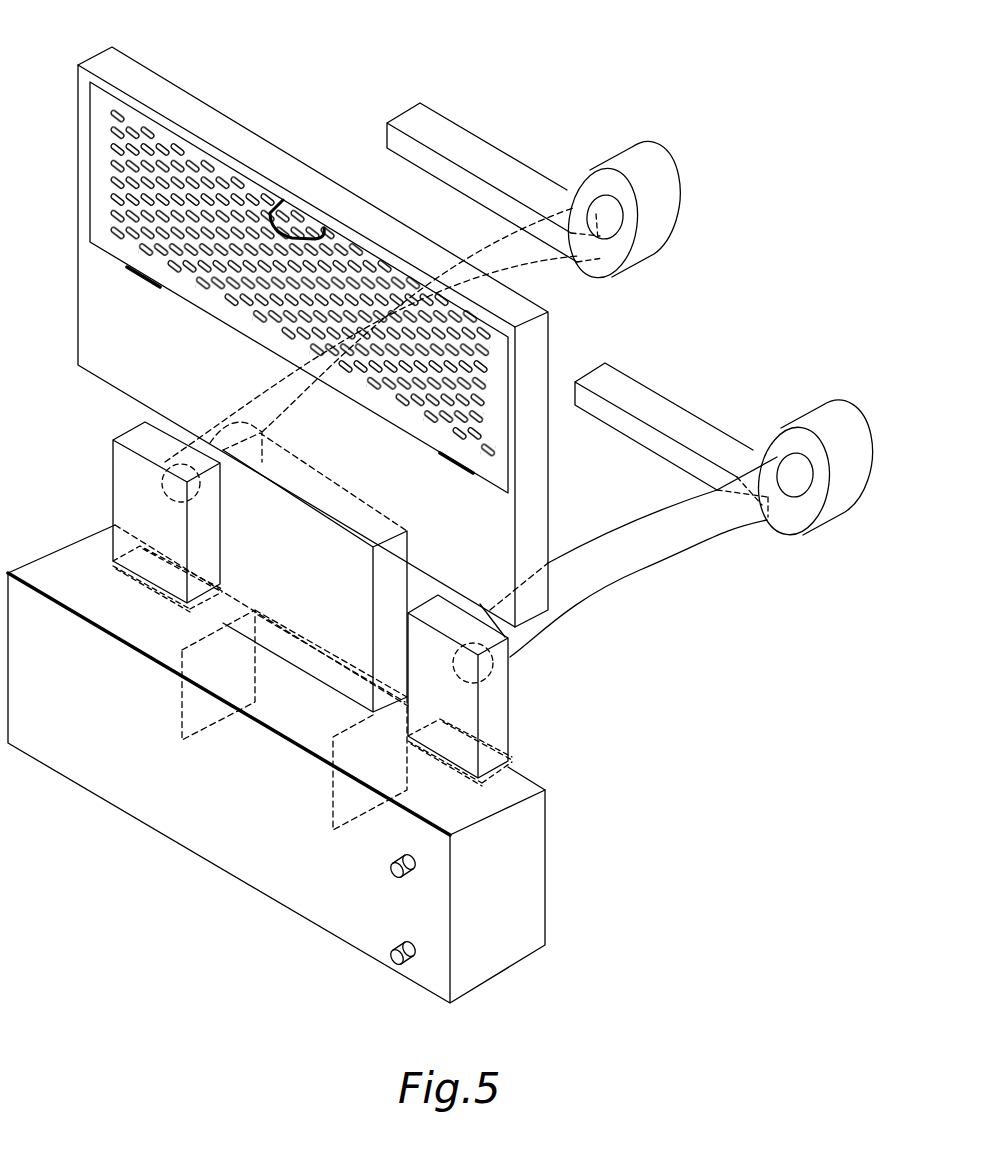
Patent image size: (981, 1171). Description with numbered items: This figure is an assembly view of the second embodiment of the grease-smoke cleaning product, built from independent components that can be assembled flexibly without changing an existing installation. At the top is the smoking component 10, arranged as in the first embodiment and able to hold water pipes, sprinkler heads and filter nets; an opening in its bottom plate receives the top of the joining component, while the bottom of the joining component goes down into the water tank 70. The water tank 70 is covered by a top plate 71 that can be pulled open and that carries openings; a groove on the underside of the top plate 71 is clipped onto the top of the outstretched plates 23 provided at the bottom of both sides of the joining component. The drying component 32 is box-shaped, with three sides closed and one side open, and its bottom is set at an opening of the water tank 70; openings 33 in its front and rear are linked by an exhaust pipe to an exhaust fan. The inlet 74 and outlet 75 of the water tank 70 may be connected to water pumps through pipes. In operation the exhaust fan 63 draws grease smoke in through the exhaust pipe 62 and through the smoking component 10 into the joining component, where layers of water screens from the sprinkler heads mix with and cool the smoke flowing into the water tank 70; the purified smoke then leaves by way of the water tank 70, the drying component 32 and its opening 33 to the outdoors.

The smoking component 10 is at (250, 94).
The outstretched plate 23 is at (333, 797).
The drying component 32 is at (522, 713).
The opening 33 is at (487, 660).
The exhaust pipe 62 is at (645, 545).
The exhaust fan 63 is at (850, 455).
The water tank 70 is at (566, 852).
The top plate 71 is at (518, 782).
The inlet 74 is at (397, 860).
The outlet 75 is at (397, 945).